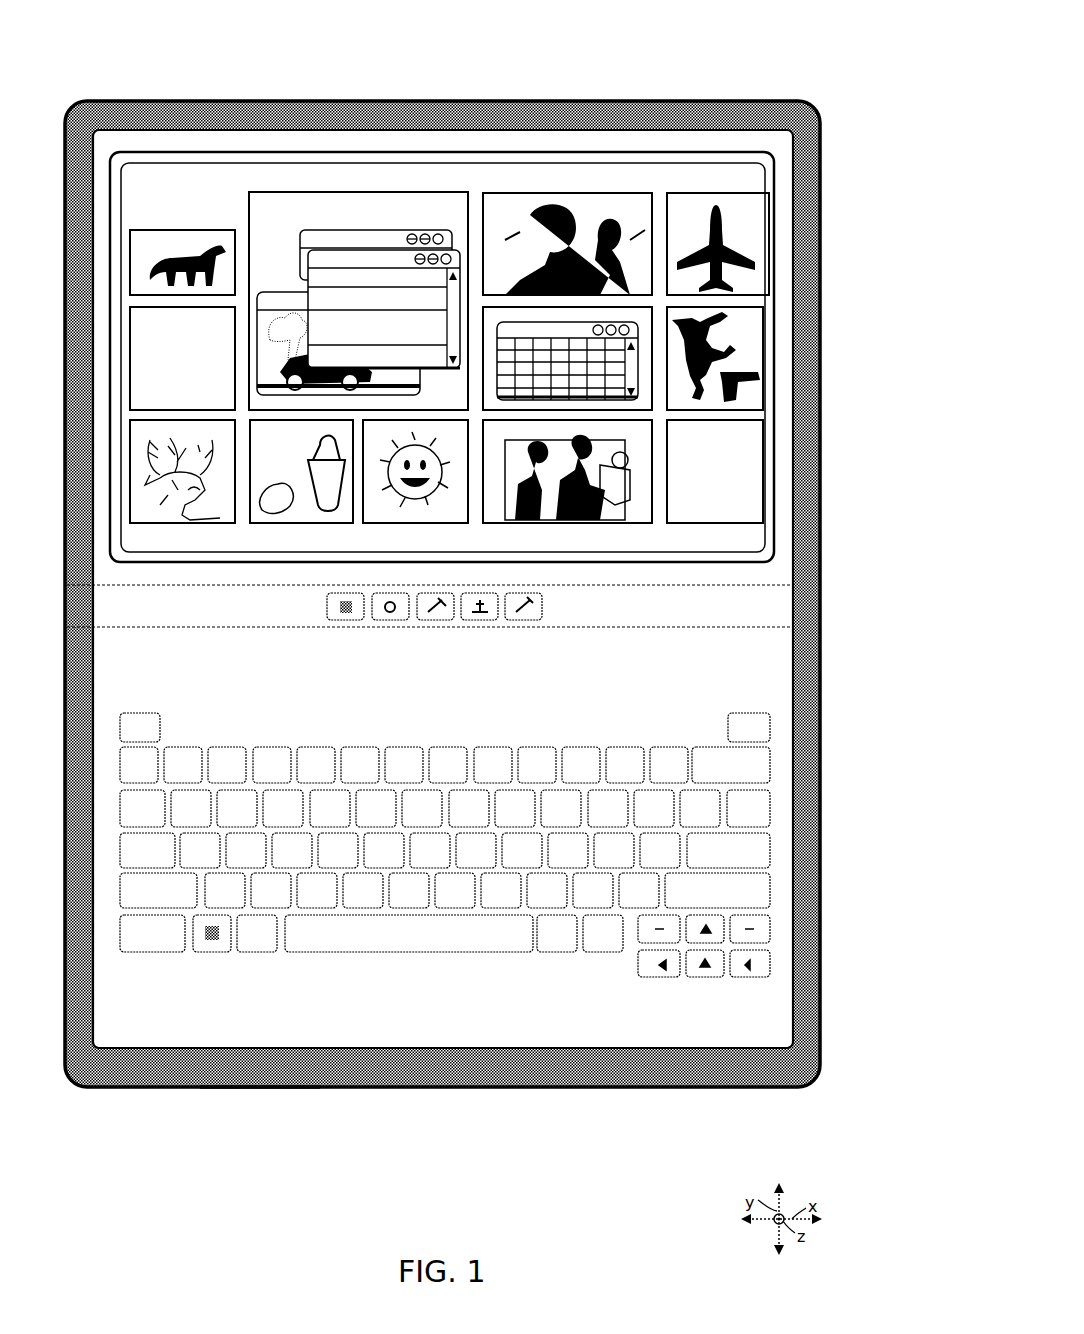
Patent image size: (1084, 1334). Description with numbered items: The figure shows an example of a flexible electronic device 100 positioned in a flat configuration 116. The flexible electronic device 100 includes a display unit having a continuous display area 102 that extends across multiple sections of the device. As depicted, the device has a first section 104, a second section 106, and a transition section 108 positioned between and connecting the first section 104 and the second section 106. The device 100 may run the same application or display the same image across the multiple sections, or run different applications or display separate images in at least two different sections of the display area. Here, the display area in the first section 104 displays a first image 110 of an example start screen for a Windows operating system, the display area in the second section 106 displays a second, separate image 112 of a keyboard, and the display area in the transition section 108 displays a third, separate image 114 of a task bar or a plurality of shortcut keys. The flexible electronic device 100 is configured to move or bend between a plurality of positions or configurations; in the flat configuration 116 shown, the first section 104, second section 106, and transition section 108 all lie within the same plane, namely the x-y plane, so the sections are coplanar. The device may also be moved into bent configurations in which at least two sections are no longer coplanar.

The flexible electronic device 100 is at (217, 101).
The continuous display area 102 is at (157, 1050).
The first section 104 is at (397, 288).
The second section 106 is at (394, 940).
The transition section 108 is at (450, 629).
The first image 110 is at (655, 216).
The second image 112 is at (560, 952).
The third image 114 is at (556, 604).
The flat configuration 116 is at (255, 1108).